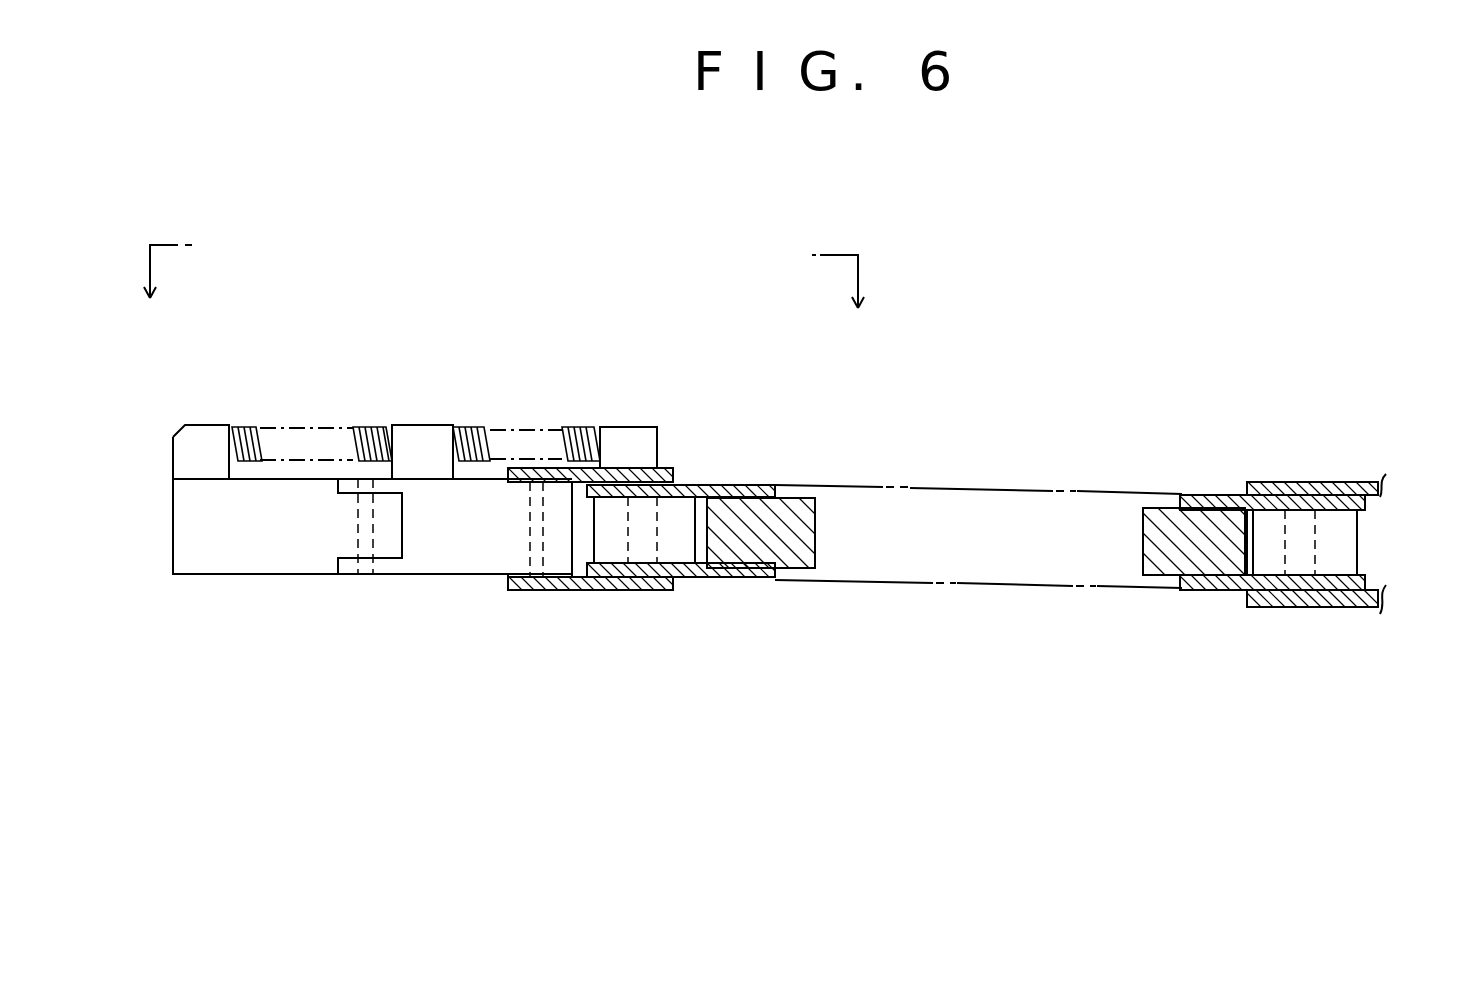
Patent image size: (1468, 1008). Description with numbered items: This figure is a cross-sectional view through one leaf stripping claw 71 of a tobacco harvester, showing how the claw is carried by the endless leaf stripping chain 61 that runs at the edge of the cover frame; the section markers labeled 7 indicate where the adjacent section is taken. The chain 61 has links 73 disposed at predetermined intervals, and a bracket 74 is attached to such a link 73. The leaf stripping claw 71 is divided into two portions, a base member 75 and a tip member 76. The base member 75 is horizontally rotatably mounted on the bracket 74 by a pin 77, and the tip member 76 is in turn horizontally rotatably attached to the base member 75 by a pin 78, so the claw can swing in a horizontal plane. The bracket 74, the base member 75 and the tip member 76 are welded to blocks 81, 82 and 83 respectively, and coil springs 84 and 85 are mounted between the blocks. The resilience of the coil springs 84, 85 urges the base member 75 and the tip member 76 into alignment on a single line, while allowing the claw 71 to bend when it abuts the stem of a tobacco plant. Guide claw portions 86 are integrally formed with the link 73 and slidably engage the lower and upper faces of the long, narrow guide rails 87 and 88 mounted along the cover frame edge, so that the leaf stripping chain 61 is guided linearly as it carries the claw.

The section line of FIG. 7 is at (504, 254).
The leaf stripping chain 61 is at (1391, 536).
The leaf stripping claw 71 is at (419, 688).
The link 73 is at (698, 485).
The bracket 74 is at (672, 468).
The base member 75 is at (487, 575).
The tip member 76 is at (283, 562).
The pin 77 is at (552, 595).
The pin 78 is at (363, 575).
The block 81 is at (625, 438).
The block 82 is at (440, 424).
The block 83 is at (208, 430).
The coil spring 84 is at (583, 430).
The coil spring 85 is at (373, 430).
The guide claw portion 86 is at (763, 483).
The guide rail 87 is at (803, 497).
The guide rail 88 is at (1172, 515).